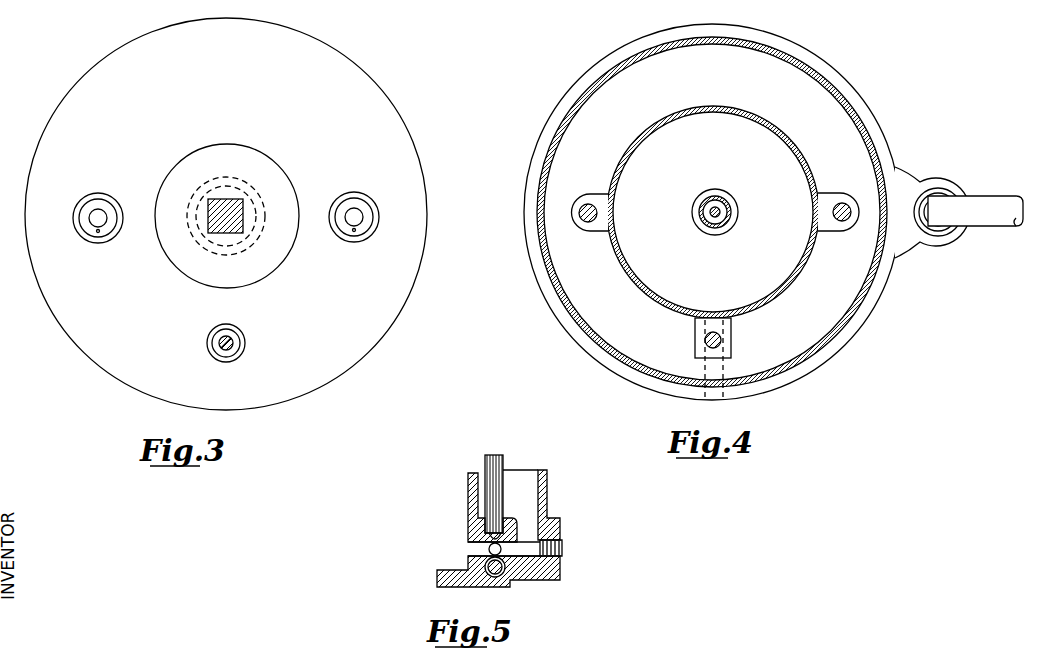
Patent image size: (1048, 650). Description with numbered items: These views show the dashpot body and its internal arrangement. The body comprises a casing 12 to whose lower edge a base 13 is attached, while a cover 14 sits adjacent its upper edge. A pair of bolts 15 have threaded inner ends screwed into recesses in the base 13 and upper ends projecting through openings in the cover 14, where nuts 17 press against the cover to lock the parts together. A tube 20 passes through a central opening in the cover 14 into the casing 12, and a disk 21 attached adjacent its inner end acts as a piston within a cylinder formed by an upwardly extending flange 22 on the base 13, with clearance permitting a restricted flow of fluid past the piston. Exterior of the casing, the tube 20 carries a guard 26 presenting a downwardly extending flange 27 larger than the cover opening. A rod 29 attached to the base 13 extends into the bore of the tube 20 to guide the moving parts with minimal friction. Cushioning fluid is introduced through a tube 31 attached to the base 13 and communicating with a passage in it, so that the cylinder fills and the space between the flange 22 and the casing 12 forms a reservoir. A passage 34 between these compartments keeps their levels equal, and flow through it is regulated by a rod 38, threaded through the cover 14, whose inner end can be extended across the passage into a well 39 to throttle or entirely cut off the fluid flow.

In FIG. 4, the casing 12 is at (535, 190).
In FIG. 5, the casing 12 is at (545, 470).
In FIG. 4, the base 13 is at (631, 331).
In FIG. 5, the base 13 is at (507, 576).
In FIG. 3, the cover 14 is at (226, 214).
In FIG. 3, the bolts 15 is at (97, 207).
In FIG. 4, the bolts 15 is at (588, 204).
In FIG. 3, the nuts 17 is at (100, 232).
In FIG. 4, the tube 20 is at (714, 200).
In FIG. 4, the disk 21 is at (666, 162).
In FIG. 4, the flange 22 is at (713, 106).
In FIG. 5, the flange 22 is at (468, 486).
In FIG. 3, the guard 26 is at (277, 150).
In FIG. 3, the flange 27 is at (226, 184).
In FIG. 4, the rod 29 is at (710, 214).
In FIG. 4, the tube 31 is at (975, 197).
In FIG. 5, the passage 34 is at (518, 545).
In FIG. 3, the rod 38 is at (226, 334).
In FIG. 4, the rod 38 is at (723, 340).
In FIG. 5, the rod 38 is at (493, 455).
In FIG. 5, the well 39 is at (496, 578).